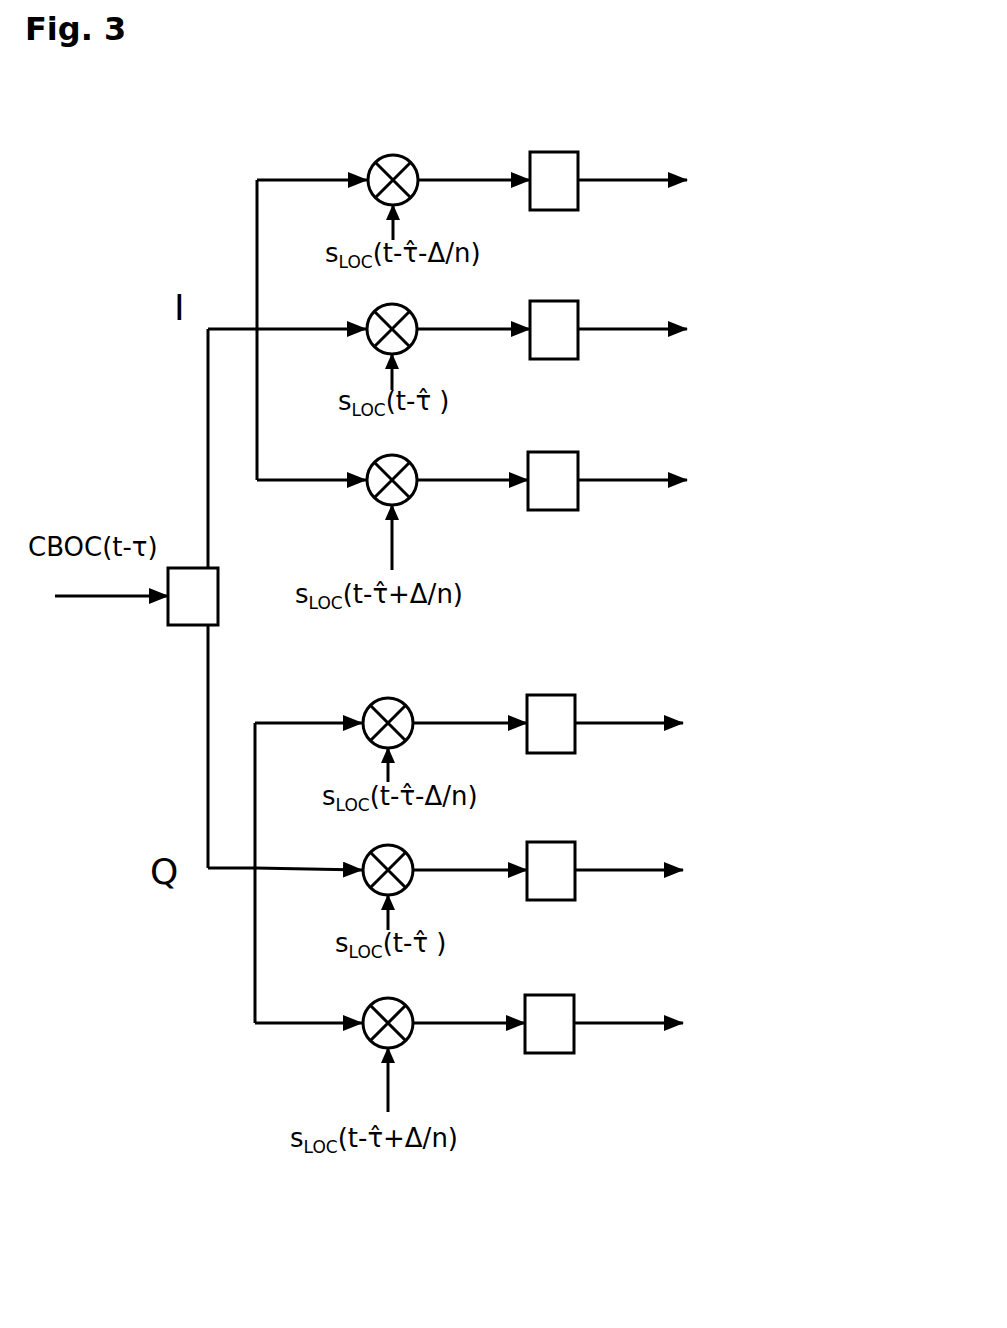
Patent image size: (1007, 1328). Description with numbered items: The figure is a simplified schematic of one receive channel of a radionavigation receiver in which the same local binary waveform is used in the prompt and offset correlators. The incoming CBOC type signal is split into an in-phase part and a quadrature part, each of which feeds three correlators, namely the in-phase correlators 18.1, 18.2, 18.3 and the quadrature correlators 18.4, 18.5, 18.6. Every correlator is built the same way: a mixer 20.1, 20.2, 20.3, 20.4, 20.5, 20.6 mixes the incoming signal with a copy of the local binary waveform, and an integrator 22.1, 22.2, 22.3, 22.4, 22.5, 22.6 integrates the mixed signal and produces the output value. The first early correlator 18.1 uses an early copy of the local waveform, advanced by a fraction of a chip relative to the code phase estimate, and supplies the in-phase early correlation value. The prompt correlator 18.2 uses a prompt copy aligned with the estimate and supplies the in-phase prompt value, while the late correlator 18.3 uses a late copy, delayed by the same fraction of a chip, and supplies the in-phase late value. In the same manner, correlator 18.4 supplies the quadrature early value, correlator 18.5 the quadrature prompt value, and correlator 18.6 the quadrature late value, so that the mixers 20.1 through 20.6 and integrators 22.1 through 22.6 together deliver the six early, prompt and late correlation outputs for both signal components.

The early correlator 18.1 is at (628, 151).
The prompt correlator 18.2 is at (630, 305).
The late correlator 18.3 is at (628, 452).
The correlator 18.4 is at (622, 697).
The correlator 18.5 is at (630, 848).
The correlator 18.6 is at (622, 995).
The mixer 20.1 is at (386, 155).
The mixer 20.2 is at (380, 306).
The mixer 20.3 is at (380, 457).
The mixer 20.4 is at (380, 698).
The mixer 20.5 is at (376, 848).
The mixer 20.6 is at (376, 1000).
The integrator 22.1 is at (558, 210).
The integrator 22.2 is at (562, 359).
The integrator 22.3 is at (556, 510).
The integrator 22.4 is at (560, 753).
The integrator 22.5 is at (560, 900).
The integrator 22.6 is at (553, 1053).